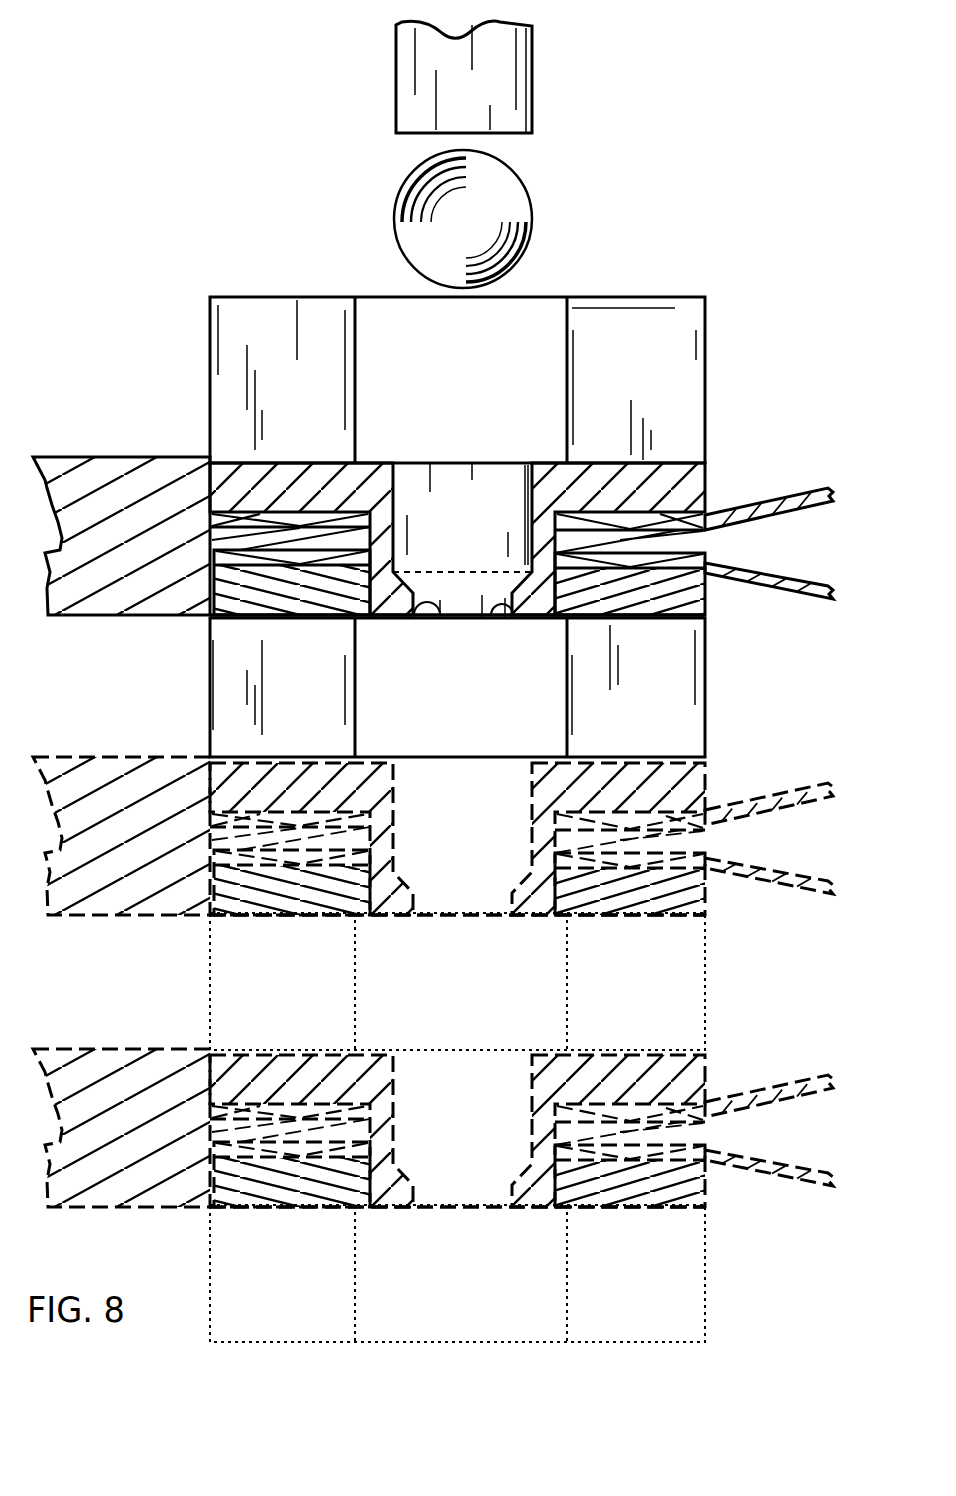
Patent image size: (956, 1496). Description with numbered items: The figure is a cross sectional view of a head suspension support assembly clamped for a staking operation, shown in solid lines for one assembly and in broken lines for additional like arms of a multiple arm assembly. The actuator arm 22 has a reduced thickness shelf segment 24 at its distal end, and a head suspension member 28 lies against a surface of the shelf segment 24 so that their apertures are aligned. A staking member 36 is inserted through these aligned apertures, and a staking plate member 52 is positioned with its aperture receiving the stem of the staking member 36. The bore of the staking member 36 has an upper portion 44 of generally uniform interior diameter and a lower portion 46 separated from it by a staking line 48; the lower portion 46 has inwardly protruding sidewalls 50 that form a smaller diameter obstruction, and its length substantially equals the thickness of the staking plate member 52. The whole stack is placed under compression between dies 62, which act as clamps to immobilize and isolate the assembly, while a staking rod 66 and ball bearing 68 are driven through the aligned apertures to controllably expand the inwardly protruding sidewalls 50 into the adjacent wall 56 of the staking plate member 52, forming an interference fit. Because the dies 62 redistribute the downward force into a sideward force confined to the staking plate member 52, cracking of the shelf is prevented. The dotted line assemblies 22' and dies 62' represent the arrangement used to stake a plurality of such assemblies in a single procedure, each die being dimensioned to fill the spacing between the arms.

The actuator arm 22 is at (121, 507).
The dotted line assemblies 22' is at (121, 950).
The shelf segment 24 is at (705, 532).
The head suspension member 28 is at (812, 574).
The staking member 36 is at (710, 488).
The upper portion 44 is at (530, 513).
The lower portion 46 is at (490, 618).
The staking line 48 is at (451, 572).
The inwardly protruding sidewalls 50 is at (437, 618).
The staking plate member 52 is at (710, 597).
The adjacent wall 56 is at (303, 618).
The die 62 is at (500, 527).
The die 62' is at (499, 1127).
The staking rod 66 is at (495, 86).
The ball bearing 68 is at (507, 216).